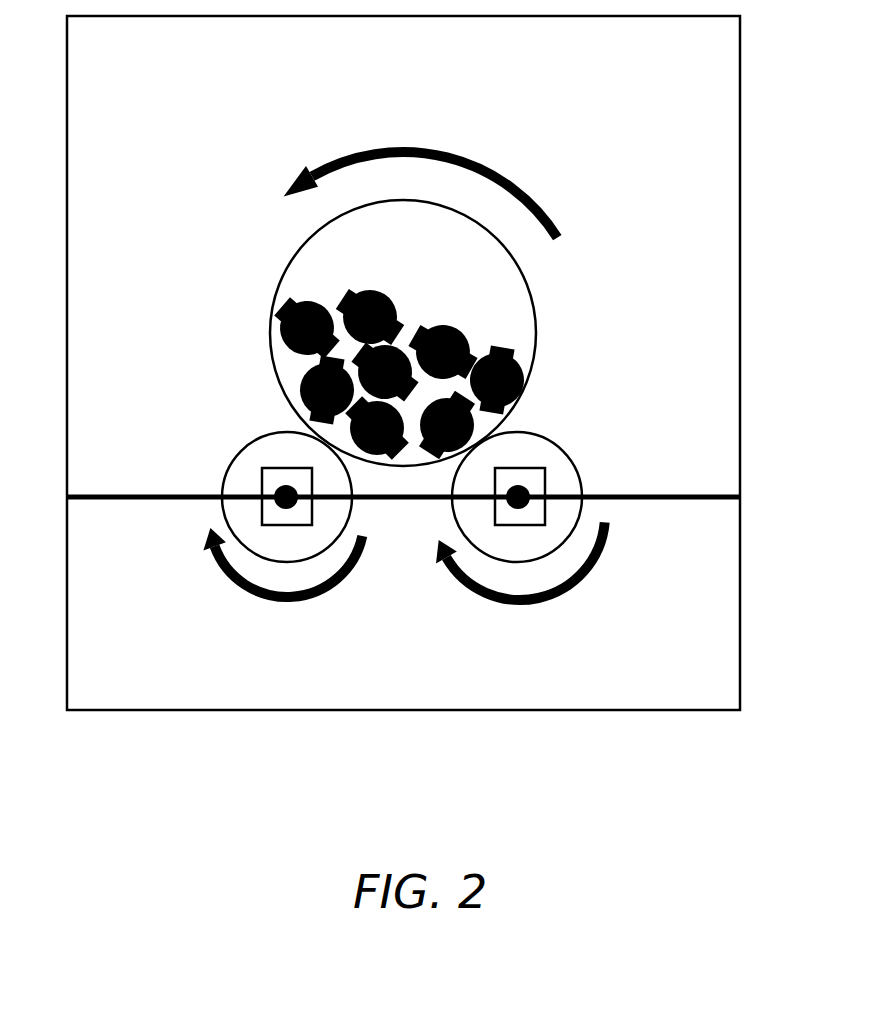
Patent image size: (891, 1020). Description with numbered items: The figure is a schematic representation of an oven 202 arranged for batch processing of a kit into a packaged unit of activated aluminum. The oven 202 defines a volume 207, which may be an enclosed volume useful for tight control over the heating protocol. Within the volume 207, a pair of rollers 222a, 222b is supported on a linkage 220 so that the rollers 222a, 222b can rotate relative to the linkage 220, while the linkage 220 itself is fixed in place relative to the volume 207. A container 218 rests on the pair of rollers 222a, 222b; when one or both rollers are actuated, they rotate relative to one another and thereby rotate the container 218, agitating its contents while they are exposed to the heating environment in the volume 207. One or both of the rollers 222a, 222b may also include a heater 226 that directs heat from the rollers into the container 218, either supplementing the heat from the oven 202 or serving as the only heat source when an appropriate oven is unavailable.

The oven 202 is at (740, 162).
The volume 207 is at (617, 120).
The container 218 is at (293, 260).
The linkage 220 is at (177, 482).
The roller 222a is at (273, 433).
The roller 222b is at (553, 442).
The heater 226 is at (262, 510).